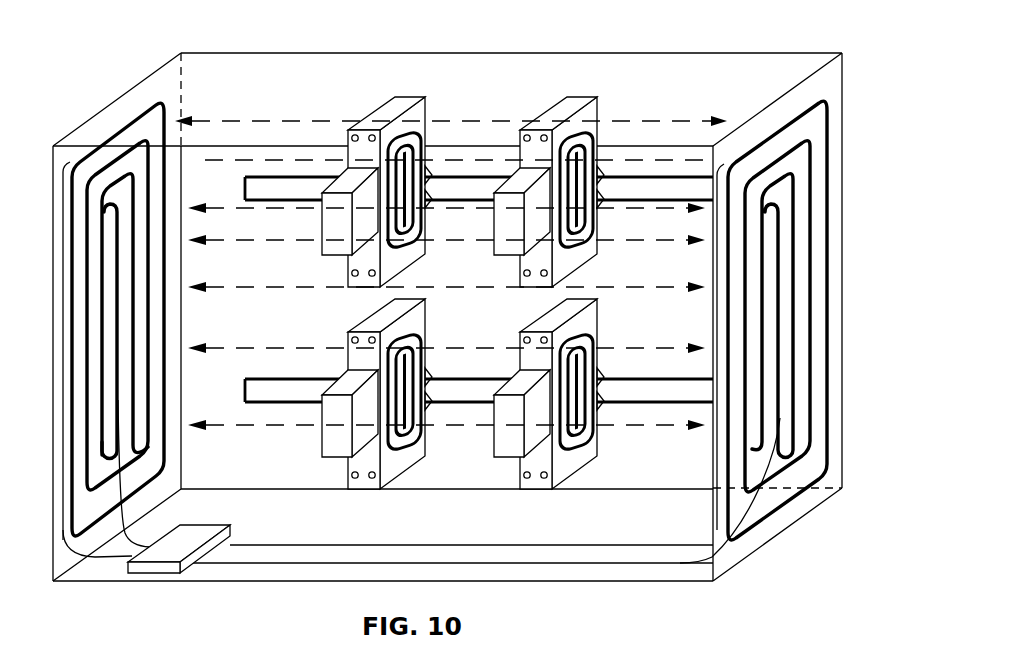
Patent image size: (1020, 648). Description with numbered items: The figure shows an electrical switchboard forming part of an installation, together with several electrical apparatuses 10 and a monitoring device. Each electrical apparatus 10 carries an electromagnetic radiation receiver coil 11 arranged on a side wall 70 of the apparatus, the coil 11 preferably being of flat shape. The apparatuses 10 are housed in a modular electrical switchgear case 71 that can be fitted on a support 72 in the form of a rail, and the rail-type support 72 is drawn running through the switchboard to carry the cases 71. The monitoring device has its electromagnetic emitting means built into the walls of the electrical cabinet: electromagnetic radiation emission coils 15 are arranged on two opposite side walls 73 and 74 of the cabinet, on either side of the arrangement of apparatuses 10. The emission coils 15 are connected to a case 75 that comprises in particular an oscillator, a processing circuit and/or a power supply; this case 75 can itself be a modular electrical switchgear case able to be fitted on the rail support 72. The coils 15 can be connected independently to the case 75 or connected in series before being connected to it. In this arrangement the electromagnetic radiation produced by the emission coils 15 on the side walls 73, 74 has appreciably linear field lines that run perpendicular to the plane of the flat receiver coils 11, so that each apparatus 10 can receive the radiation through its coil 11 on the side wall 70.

The electrical apparatus 10 is at (382, 117).
The electromagnetic radiation receiver coil 11 is at (414, 157).
The electromagnetic radiation emission coil 15 is at (74, 395).
The side wall 70 is at (425, 117).
The modular electrical switchgear case 71 is at (342, 121).
The support in the form of a rail 72 is at (267, 188).
The side wall 73 is at (103, 136).
The side wall 74 is at (818, 84).
The case 75 is at (148, 575).